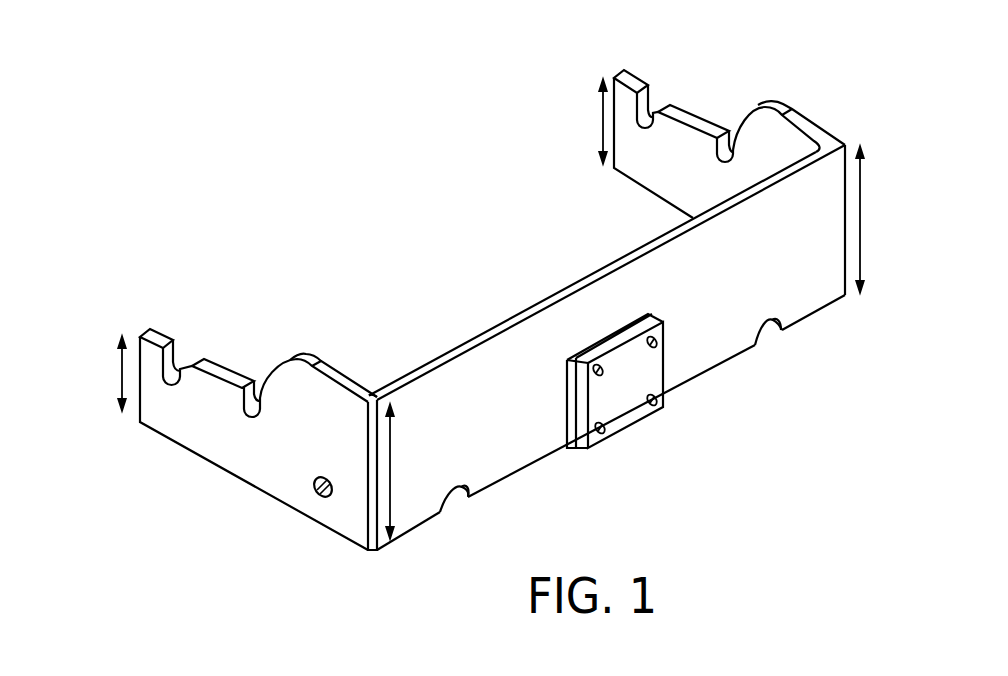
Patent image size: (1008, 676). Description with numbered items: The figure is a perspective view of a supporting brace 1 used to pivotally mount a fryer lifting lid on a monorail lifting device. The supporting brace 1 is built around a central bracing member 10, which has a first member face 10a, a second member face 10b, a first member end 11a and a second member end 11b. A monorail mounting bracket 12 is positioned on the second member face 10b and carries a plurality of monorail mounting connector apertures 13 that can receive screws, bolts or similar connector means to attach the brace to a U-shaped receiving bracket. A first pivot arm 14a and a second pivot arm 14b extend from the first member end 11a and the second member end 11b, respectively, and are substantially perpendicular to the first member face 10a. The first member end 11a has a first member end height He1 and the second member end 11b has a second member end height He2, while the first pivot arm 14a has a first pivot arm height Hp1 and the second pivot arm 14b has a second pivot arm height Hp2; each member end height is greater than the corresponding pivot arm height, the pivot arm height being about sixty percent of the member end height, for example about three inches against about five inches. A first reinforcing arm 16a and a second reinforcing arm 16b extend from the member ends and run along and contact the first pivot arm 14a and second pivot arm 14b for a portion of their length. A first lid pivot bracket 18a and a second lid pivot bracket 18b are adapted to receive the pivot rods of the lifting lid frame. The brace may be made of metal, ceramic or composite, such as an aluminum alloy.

The supporting brace 1 is at (399, 304).
The central bracing member 10 is at (513, 458).
The first member face 10a is at (517, 313).
The second member face 10b is at (762, 287).
The first member end 11a is at (368, 565).
The second member end 11b is at (848, 312).
The monorail mounting bracket 12 is at (631, 432).
The monorail mounting connector apertures 13 is at (657, 405).
The first pivot arm 14a is at (195, 455).
The second pivot arm 14b is at (700, 108).
The first reinforcing arm 16a is at (343, 373).
The second reinforcing arm 16b is at (812, 117).
The first lid pivot bracket 18a is at (207, 358).
The second lid pivot bracket 18b is at (658, 112).
The first pivot arm height Hp1 is at (87, 373).
The second pivot arm height Hp2 is at (564, 121).
The first member end height He1 is at (416, 471).
The second member end height He2 is at (887, 219).